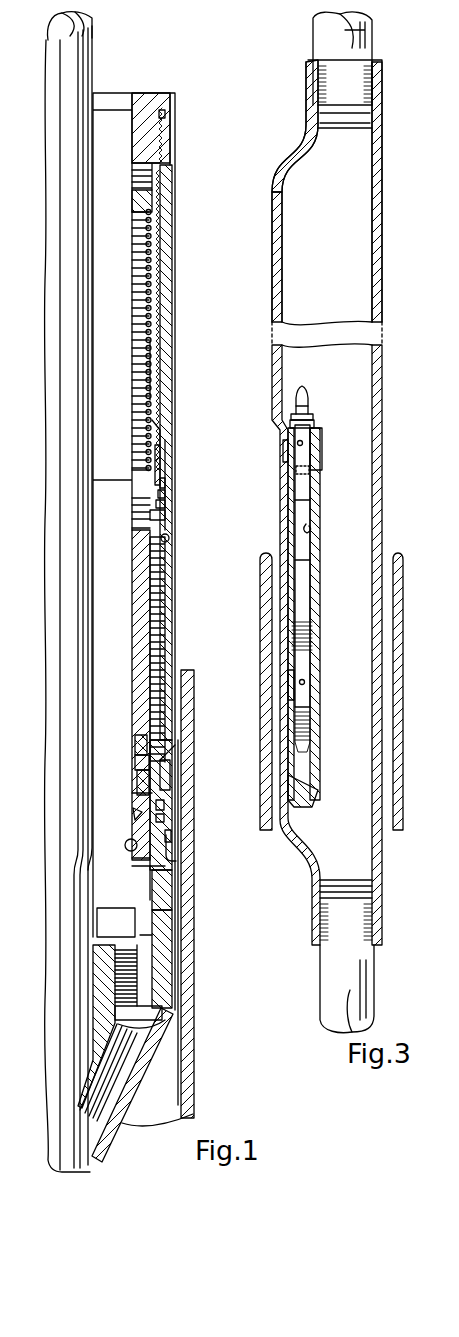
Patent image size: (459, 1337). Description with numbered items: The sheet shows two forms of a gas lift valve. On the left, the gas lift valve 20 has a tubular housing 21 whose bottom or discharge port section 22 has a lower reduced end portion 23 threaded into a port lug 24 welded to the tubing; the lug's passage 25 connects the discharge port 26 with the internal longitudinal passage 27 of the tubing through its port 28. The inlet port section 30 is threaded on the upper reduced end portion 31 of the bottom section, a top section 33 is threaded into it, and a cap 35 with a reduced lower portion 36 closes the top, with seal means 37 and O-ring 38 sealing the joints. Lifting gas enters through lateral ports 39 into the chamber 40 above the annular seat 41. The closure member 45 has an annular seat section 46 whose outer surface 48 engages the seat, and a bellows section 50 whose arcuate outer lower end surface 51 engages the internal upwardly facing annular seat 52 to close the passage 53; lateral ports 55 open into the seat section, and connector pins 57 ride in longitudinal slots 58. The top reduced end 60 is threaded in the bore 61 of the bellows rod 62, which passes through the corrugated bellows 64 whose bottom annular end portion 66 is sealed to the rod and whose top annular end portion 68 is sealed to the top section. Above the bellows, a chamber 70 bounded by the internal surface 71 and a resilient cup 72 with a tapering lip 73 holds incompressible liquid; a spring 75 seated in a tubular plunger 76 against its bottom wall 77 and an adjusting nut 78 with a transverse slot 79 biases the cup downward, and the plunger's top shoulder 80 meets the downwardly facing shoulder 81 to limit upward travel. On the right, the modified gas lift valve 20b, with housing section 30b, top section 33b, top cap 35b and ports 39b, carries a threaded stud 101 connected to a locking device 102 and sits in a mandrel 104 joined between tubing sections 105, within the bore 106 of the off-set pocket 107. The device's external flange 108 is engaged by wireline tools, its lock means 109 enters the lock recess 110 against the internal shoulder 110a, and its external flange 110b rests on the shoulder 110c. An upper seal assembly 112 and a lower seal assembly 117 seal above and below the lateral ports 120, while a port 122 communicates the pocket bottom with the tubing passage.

In FIG. 1, the gas lift valve 20 is at (190, 346).
In FIG. 1, the housing 21 is at (184, 447).
In FIG. 1, the bottom or discharge port section 22 is at (175, 918).
In FIG. 1, the lower reduced end portion 23 is at (160, 976).
In FIG. 1, the port lug 24 is at (165, 996).
In FIG. 1, the port or passage 25 is at (140, 1048).
In FIG. 1, the discharge port 26 is at (152, 936).
In FIG. 1, the internal longitudinal passage 27 is at (75, 932).
In FIG. 1, the port 28 is at (100, 1129).
In FIG. 1, the inlet port section 30 is at (176, 788).
In FIG. 1, the upper reduced end portion 31 is at (172, 883).
In FIG. 1, the top section 33 is at (168, 268).
In FIG. 1, the cap 35 is at (172, 98).
In FIG. 1, the reduced lower portion 36 is at (160, 138).
In FIG. 1, the O-ring seal means 37 is at (166, 480).
In FIG. 1, the O-ring 38 is at (166, 116).
In FIG. 1, the lateral ports 39 is at (176, 850).
In FIG. 1, the chamber 40 is at (170, 780).
In FIG. 1, the annular seat 41 is at (140, 867).
In FIG. 1, the closure member 45 is at (164, 802).
In FIG. 1, the annular seat section 46 is at (164, 816).
In FIG. 1, the outer surface 48 is at (150, 875).
In FIG. 1, the bellows section 50 is at (137, 766).
In FIG. 1, the arcuate outer lower end surface 51 is at (130, 839).
In FIG. 1, the internal upwardly facing annular seat 52 is at (134, 812).
In FIG. 1, the passage or port 53 is at (132, 859).
In FIG. 1, the lateral ports 55 is at (170, 834).
In FIG. 1, the connector pins 57 is at (138, 790).
In FIG. 1, the longitudinal slots 58 is at (162, 773).
In FIG. 1, the top reduced end 60 is at (142, 746).
In FIG. 1, the downwardly opening bore 61 is at (142, 730).
In FIG. 1, the bellows rod 62 is at (158, 624).
In FIG. 1, the tubular corrugated bellows 64 is at (166, 584).
In FIG. 1, the bottom annular end portion 66 is at (194, 736).
In FIG. 1, the top annular end portion 68 is at (170, 539).
In FIG. 1, the chamber 70 is at (168, 522).
In FIG. 1, the internal surface 71 is at (166, 508).
In FIG. 1, the resilient cup 72 is at (134, 503).
In FIG. 1, the annular lip 73 is at (166, 494).
In FIG. 1, the spring 75 is at (150, 290).
In FIG. 1, the tubular plunger 76 is at (162, 464).
In FIG. 1, the bottom wall 77 is at (140, 475).
In FIG. 1, the adjusting nut 78 is at (150, 204).
In FIG. 1, the transverse slot 79 is at (150, 186).
In FIG. 1, the annular top shoulder 80 is at (158, 438).
In FIG. 1, the internal annular downwardly facing shoulder 81 is at (158, 418).
In FIG. 3, the threaded stud 101 is at (288, 468).
In FIG. 3, the locking device 102 is at (316, 382).
In FIG. 3, the mandrel 104 is at (382, 246).
In FIG. 3, the tubing sections 105 is at (376, 36).
In FIG. 3, the bore 106 is at (310, 528).
In FIG. 3, the off-set pocket 107 is at (320, 492).
In FIG. 3, the external flange 108 is at (308, 398).
In FIG. 3, the latch or lock means 109 is at (314, 450).
In FIG. 3, the internal annular lock recess 110 is at (283, 455).
In FIG. 3, the internal shoulder 110a is at (283, 446).
In FIG. 3, the external flange 110b is at (312, 412).
In FIG. 3, the shoulder 110c is at (314, 420).
In FIG. 3, the upper seal assembly 112 is at (318, 634).
In FIG. 3, the lower seal assembly 117 is at (312, 728).
In FIG. 3, the lateral ports 120 is at (288, 687).
In FIG. 3, the port 122 is at (320, 788).
In FIG. 3, the gas lift valve 20b is at (318, 598).
In FIG. 3, the housing section 30b is at (300, 558).
In FIG. 3, the top section 33b is at (322, 510).
In FIG. 3, the top cap 35b is at (320, 470).
In FIG. 3, the ports 39b is at (306, 681).